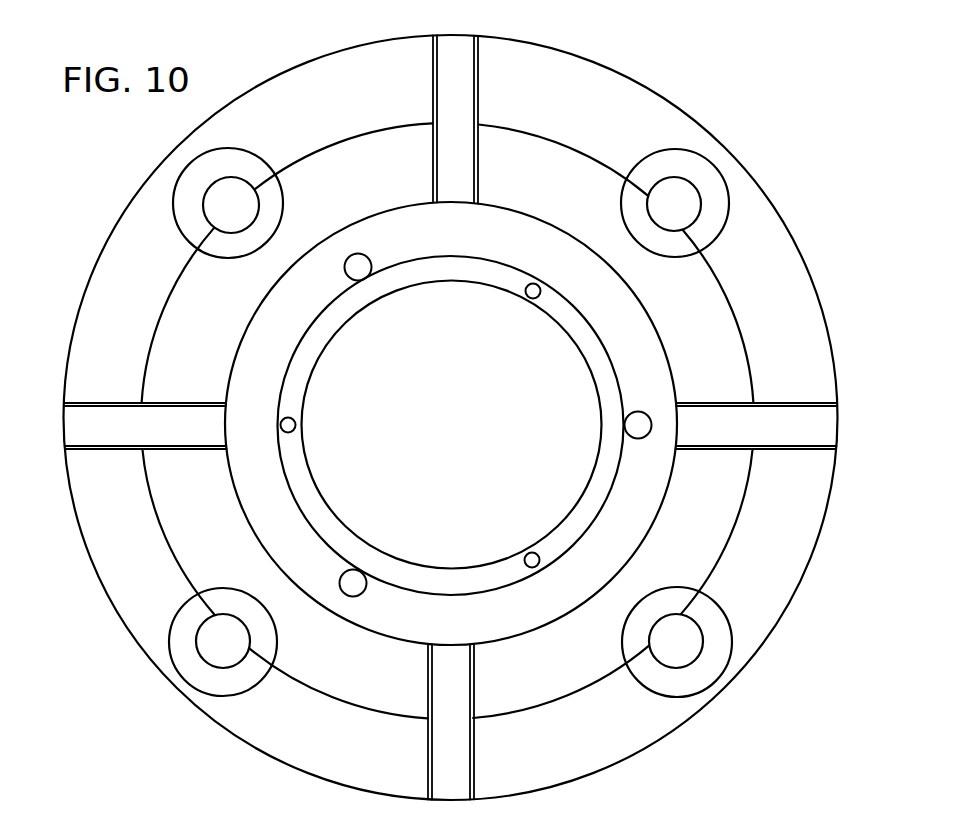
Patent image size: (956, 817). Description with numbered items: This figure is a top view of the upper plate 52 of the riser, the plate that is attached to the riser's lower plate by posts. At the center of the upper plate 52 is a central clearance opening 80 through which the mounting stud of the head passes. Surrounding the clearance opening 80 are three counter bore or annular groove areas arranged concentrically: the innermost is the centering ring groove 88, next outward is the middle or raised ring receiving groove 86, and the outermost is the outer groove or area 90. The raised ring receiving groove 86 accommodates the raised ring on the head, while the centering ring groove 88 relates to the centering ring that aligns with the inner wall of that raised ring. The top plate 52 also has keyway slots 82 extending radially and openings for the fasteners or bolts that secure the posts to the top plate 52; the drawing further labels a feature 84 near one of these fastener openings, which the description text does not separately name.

The upper plate 52 is at (746, 172).
The central clearance opening 80 is at (487, 393).
The keyway slots 82 is at (775, 427).
The bolt holes with bosses 84 is at (680, 206).
The middle or raised ring receiving groove 86 is at (280, 555).
The centering ring groove 88 is at (432, 580).
The outer groove or area 90 is at (195, 563).